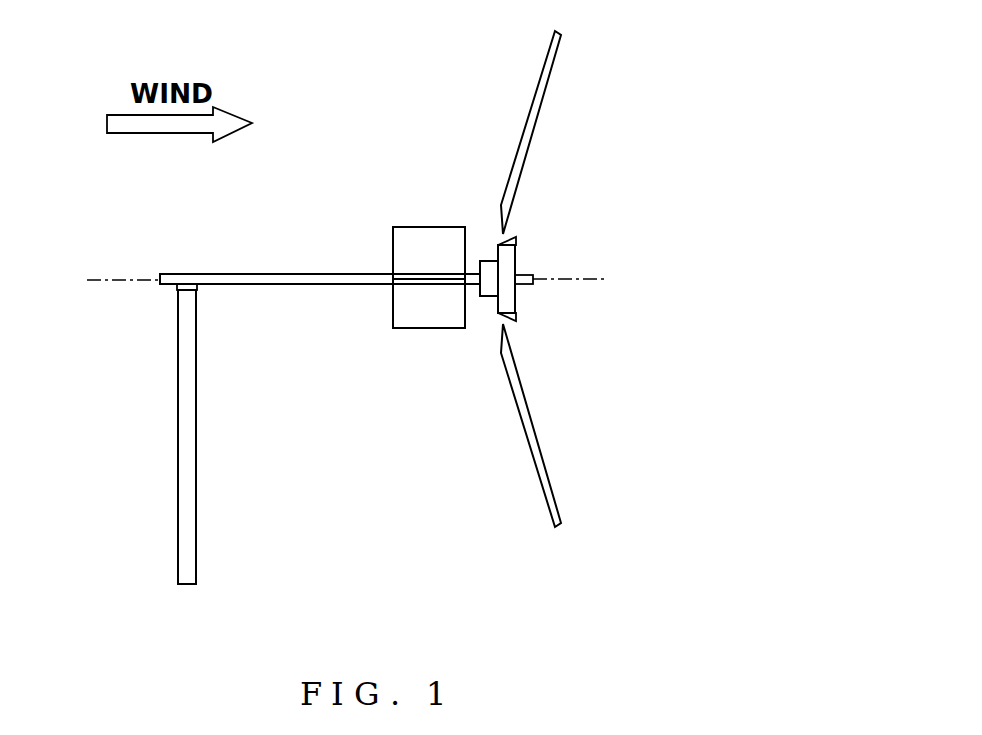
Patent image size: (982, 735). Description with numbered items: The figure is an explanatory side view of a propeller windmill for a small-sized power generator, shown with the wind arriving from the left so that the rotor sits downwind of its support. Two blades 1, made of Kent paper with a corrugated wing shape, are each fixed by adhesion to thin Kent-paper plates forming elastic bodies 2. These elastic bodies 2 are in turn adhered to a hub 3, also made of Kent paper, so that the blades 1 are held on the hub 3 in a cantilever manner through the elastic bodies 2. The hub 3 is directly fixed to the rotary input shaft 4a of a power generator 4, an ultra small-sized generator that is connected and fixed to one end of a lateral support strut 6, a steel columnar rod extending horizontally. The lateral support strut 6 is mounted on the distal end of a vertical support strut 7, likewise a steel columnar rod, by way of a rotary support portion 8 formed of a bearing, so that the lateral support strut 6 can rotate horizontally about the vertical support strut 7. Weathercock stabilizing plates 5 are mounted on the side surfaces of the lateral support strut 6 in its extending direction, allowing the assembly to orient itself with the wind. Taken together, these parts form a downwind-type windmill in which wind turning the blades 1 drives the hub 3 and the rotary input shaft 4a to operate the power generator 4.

The blade 1 is at (535, 112).
The elastic body 2 is at (503, 232).
The hub 3 is at (508, 267).
The power generator 4 is at (488, 270).
The rotary input shaft 4a is at (530, 282).
The weathercock stabilizing plate 5 is at (418, 310).
The lateral support strut 6 is at (280, 279).
The vertical support strut 7 is at (185, 499).
The rotary support portion 8 is at (187, 288).